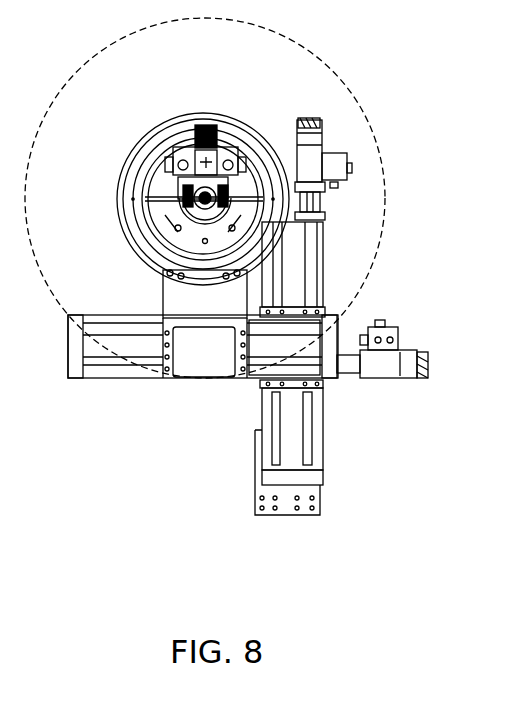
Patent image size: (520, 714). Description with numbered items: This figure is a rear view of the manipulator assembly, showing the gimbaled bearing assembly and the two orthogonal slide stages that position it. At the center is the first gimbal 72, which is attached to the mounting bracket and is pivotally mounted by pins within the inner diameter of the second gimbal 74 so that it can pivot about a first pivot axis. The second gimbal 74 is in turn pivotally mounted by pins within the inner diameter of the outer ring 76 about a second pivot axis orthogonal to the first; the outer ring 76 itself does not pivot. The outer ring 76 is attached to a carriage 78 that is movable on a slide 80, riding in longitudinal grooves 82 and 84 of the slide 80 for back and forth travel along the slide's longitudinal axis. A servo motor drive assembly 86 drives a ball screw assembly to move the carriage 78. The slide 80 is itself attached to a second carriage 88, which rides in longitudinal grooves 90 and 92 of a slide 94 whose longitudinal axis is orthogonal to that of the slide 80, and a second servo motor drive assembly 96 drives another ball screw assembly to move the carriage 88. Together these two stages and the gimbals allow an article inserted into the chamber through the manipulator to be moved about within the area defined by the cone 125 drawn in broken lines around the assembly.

The cone 125 is at (332, 70).
The first gimbal 72 is at (153, 170).
The second gimbal 74 is at (167, 140).
The outer ring 76 is at (230, 120).
The carriage 78 is at (197, 342).
The slide 80 is at (113, 348).
The longitudinal groove 82 is at (138, 362).
The longitudinal groove 84 is at (257, 332).
The servo motor drive assembly 86 is at (443, 349).
The carriage 88 is at (322, 315).
The longitudinal groove 90 is at (293, 252).
The longitudinal groove 92 is at (310, 297).
The slide 94 is at (293, 280).
The servo motor drive assembly 96 is at (346, 146).